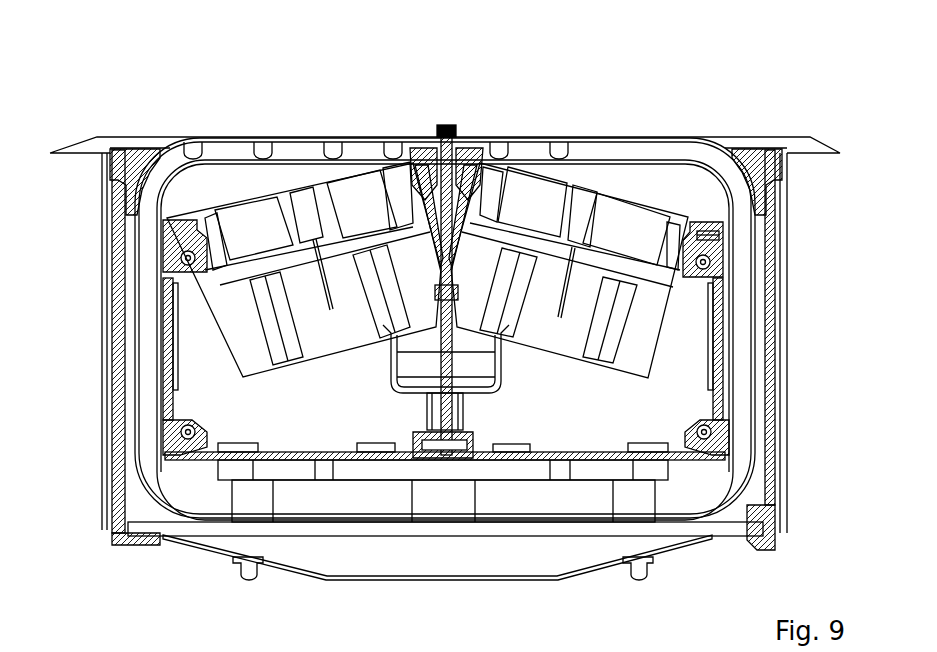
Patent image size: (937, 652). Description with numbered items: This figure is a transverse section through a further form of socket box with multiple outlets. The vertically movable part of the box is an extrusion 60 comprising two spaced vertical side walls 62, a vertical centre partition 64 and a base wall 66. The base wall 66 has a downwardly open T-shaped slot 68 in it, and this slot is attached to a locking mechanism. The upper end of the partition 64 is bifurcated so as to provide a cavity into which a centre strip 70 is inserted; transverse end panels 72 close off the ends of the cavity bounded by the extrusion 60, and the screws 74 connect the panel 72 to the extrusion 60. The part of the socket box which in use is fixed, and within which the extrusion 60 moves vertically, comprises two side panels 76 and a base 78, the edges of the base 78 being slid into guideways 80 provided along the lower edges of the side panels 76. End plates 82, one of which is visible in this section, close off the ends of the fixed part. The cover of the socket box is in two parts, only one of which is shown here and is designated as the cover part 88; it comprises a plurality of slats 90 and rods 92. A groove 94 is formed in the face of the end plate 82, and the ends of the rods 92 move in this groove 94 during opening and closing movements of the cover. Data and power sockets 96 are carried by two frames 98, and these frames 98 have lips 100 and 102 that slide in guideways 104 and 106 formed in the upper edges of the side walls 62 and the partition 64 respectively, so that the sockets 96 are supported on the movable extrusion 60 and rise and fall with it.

The extrusion 60 is at (733, 420).
The side walls 62 is at (166, 342).
The centre partition 64 is at (447, 410).
The base wall 66 is at (597, 458).
The T-shaped slot 68 is at (462, 457).
The centre strip 70 is at (445, 165).
The transverse end panels 72 is at (343, 410).
The screws 74 is at (185, 258).
The side panels 76 is at (102, 402).
The base 78 is at (673, 538).
The guideways 80 is at (787, 528).
The end plates 82 is at (208, 500).
The cover part 88 is at (347, 120).
The slats 90 is at (267, 143).
The rods 92 is at (192, 146).
The groove 94 is at (153, 190).
The data and power sockets 96 is at (358, 167).
The frames 98 is at (195, 212).
The lip 100 is at (733, 236).
The lip 102 is at (463, 167).
The guideway 104 is at (710, 257).
The guideway 106 is at (487, 167).